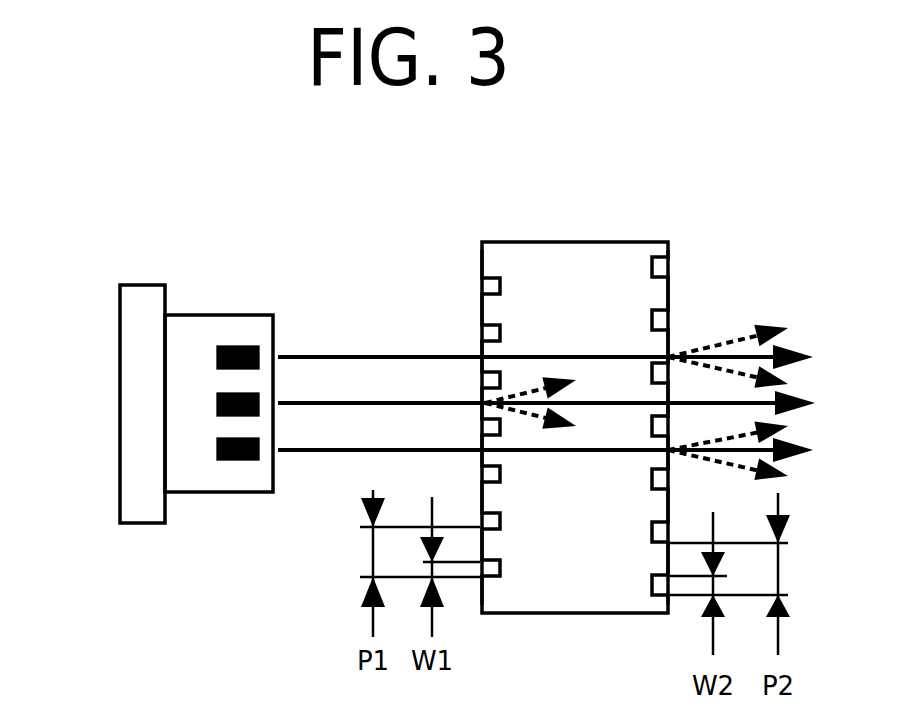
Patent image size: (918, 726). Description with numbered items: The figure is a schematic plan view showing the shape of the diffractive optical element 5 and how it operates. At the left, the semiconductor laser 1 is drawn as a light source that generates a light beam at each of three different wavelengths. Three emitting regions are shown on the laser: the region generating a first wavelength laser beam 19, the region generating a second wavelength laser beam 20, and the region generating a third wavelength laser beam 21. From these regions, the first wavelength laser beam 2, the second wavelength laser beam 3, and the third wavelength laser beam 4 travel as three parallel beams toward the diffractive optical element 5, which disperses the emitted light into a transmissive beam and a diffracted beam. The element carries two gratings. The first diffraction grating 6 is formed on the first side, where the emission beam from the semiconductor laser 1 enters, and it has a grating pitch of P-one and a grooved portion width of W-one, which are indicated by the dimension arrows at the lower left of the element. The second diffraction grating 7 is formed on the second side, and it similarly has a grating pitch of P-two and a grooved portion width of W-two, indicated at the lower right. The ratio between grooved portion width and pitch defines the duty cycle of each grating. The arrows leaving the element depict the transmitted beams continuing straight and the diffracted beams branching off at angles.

The semiconductor laser 1 is at (147, 505).
The first wavelength laser beam 2 is at (316, 452).
The second wavelength laser beam 3 is at (316, 403).
The third wavelength laser beam 4 is at (388, 357).
The diffractive optical element 5 is at (551, 257).
The first diffraction grating 6 is at (482, 257).
The second diffraction grating 7 is at (668, 290).
The region generating a first wavelength laser beam 19 is at (217, 450).
The region generating a second wavelength laser beam 20 is at (217, 405).
The region generating a third wavelength laser beam 21 is at (228, 346).